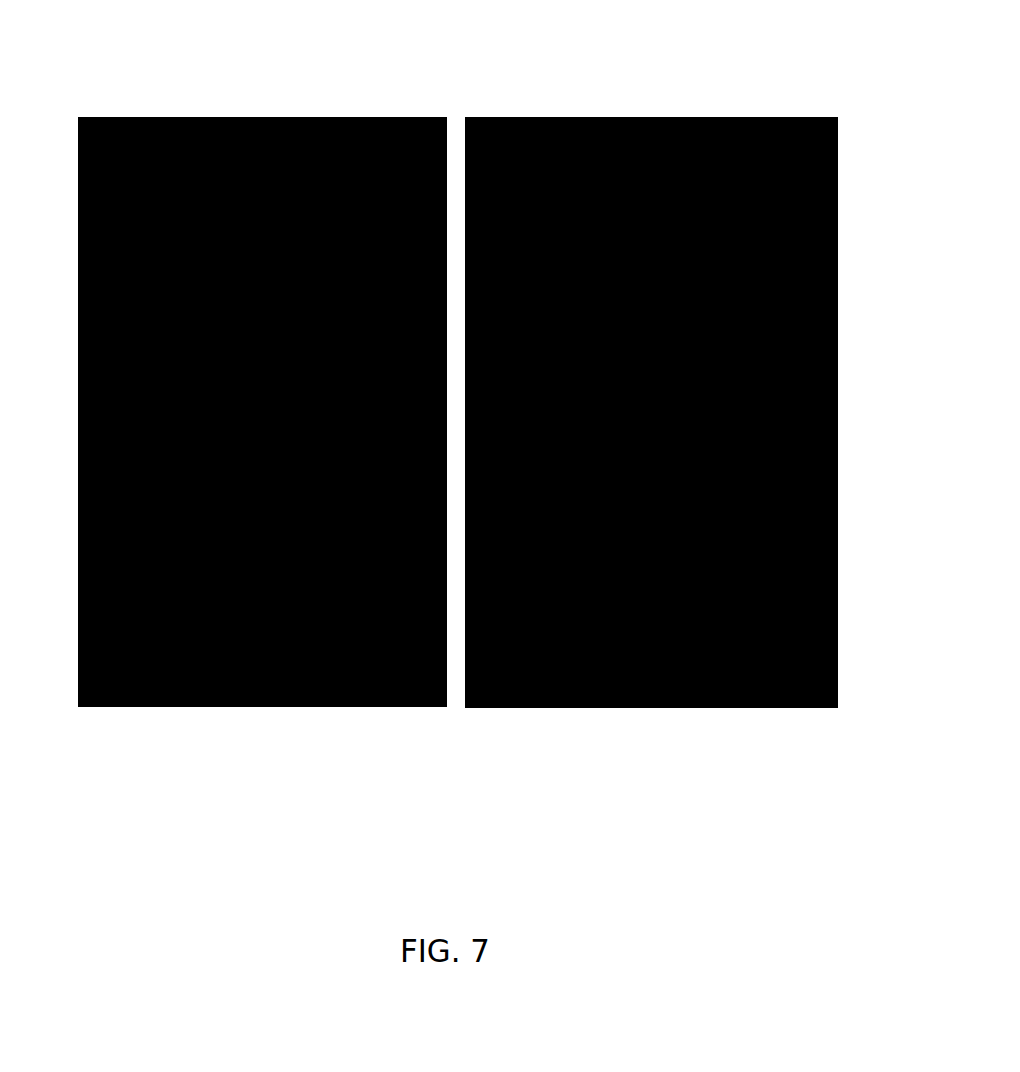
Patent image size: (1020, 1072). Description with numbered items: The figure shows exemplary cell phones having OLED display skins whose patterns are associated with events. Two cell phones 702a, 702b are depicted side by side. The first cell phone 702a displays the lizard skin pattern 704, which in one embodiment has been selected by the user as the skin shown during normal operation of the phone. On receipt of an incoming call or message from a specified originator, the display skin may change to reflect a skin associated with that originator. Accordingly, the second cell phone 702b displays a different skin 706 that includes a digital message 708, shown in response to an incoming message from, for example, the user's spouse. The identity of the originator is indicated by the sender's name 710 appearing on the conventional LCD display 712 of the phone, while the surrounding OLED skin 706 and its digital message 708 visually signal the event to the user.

The cell phone 702a is at (233, 378).
The cell phone 702b is at (696, 376).
The lizard skin pattern 704 is at (77, 502).
The skin 706 is at (838, 409).
The digital message 708 is at (838, 590).
The sender's name 710 is at (781, 113).
The conventional LCD display 712 is at (543, 113).